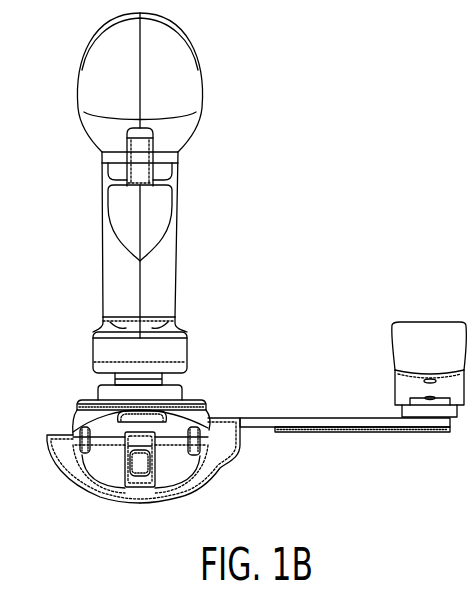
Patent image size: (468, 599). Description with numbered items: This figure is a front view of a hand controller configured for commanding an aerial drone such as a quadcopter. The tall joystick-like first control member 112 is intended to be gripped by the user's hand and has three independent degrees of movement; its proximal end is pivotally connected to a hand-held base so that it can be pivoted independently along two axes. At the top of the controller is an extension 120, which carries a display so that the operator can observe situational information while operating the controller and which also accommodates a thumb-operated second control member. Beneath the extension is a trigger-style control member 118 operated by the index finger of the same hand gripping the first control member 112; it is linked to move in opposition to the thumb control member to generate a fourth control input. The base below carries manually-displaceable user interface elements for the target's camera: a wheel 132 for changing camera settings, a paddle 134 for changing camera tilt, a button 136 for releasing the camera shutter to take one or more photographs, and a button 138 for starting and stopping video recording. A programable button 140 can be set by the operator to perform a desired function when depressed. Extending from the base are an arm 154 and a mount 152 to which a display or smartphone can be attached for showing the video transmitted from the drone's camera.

The first control member 112 is at (158, 274).
The control member 118 is at (141, 160).
The extension 120 is at (189, 77).
The wheel 132 is at (157, 413).
The paddle 134 is at (141, 468).
The button 136 is at (197, 456).
The button 138 is at (202, 440).
The programable button 140 is at (90, 454).
The mount 152 is at (434, 338).
The arm 154 is at (295, 419).